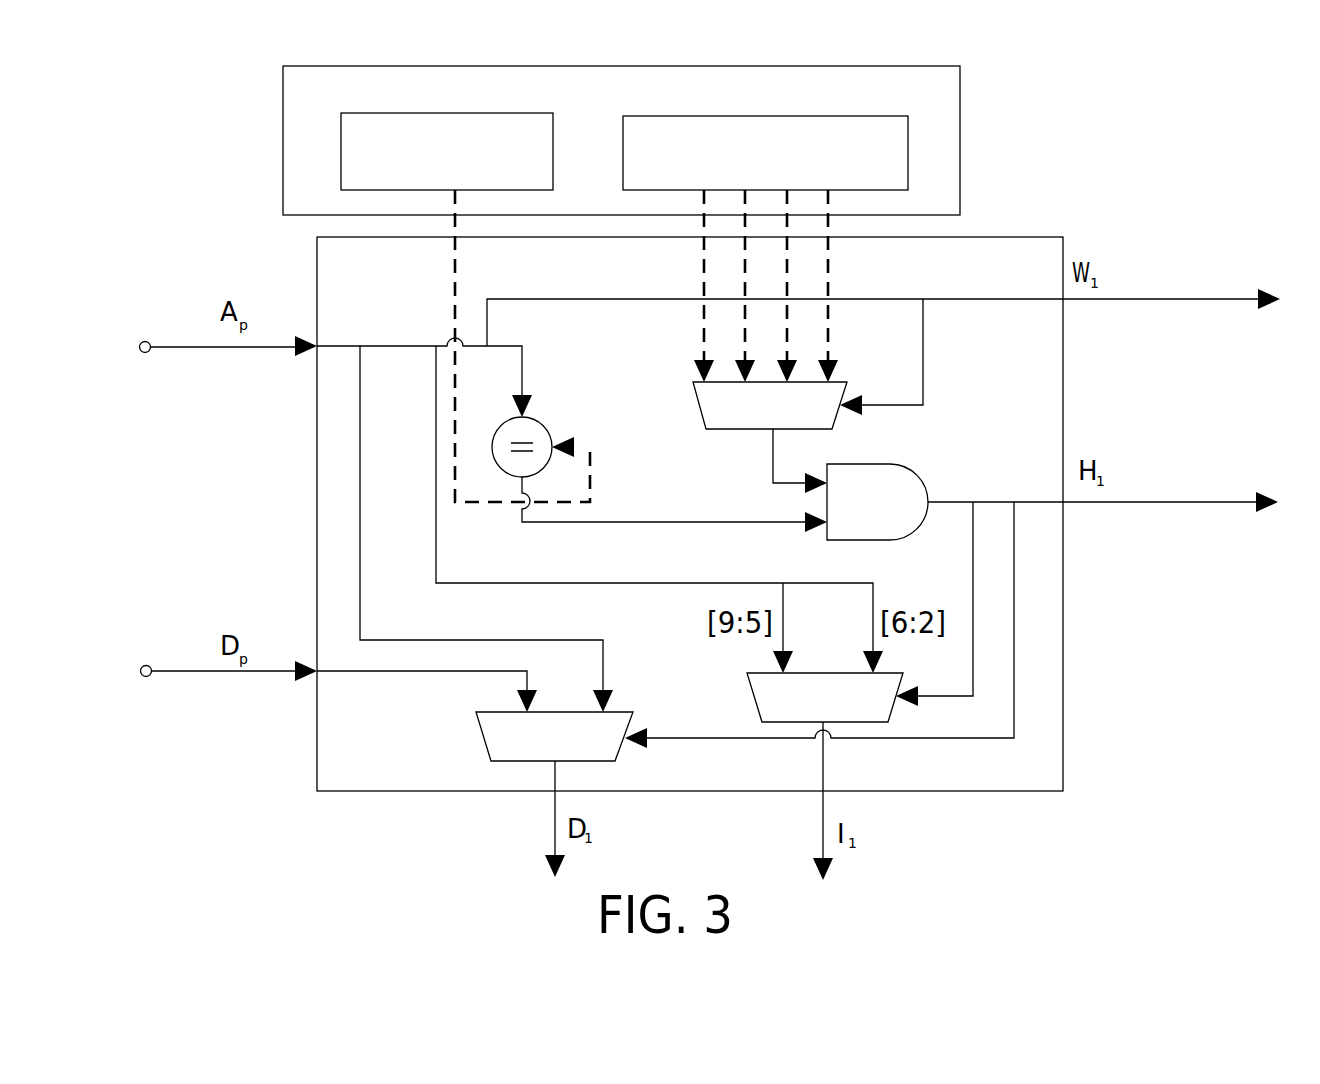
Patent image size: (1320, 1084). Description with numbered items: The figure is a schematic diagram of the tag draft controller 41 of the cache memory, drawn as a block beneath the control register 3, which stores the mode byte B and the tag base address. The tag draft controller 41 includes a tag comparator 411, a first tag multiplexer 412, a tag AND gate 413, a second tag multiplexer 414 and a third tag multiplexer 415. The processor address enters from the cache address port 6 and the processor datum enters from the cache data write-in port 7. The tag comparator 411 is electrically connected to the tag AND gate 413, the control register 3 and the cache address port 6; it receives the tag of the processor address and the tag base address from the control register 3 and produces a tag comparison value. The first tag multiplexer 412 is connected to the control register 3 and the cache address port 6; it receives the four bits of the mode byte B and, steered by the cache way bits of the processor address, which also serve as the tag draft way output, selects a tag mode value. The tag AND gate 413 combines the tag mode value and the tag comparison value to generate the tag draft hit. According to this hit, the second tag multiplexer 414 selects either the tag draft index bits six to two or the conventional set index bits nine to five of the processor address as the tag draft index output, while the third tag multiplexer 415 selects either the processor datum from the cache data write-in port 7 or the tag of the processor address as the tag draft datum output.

The control register 3 is at (957, 137).
The tag draft controller 41 is at (1064, 192).
The tag comparator 411 is at (547, 428).
The first tag multiplexer 412 is at (699, 409).
The tag AND gate 413 is at (883, 466).
The second tag multiplexer 414 is at (753, 697).
The third tag multiplexer 415 is at (482, 738).
The cache address port 6 is at (145, 341).
The cache data write-in port 7 is at (146, 677).